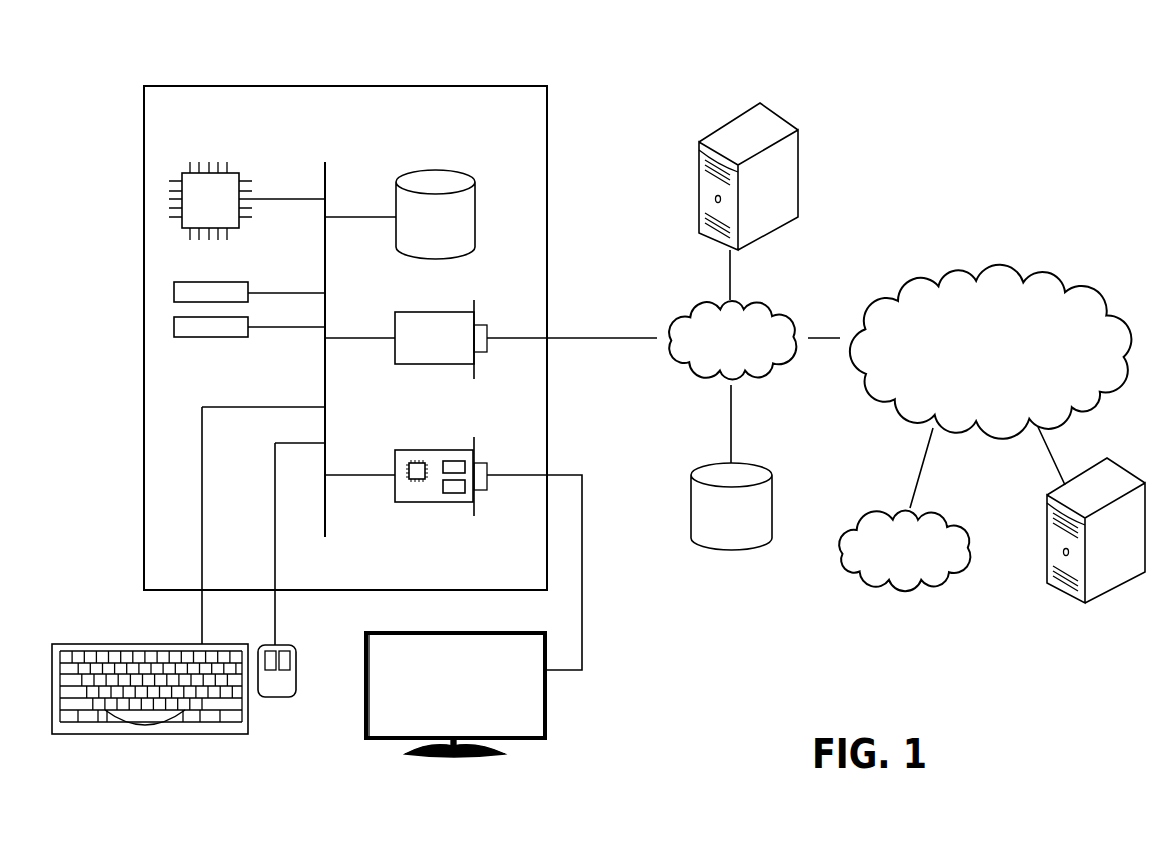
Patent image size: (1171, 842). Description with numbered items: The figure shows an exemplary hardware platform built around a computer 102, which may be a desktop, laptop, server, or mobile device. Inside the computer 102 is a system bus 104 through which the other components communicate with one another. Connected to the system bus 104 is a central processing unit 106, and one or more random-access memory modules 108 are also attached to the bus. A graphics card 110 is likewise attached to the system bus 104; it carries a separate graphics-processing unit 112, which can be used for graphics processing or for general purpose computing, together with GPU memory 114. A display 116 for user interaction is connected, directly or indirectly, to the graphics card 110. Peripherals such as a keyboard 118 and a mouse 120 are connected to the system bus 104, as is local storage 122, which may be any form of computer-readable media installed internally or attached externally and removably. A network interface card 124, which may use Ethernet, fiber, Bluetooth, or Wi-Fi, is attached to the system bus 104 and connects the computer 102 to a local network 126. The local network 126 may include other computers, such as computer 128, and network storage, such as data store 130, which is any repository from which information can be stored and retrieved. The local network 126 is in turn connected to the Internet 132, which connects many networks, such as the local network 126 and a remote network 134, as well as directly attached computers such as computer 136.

The computer 102 is at (502, 85).
The system bus 104 is at (327, 172).
The central processing unit (CPU) 106 is at (232, 168).
The random-access memory (RAM) modules 108 is at (250, 322).
The graphics card 110 is at (393, 462).
The graphics-processing unit (GPU) 112 is at (417, 475).
The GPU memory 114 is at (453, 493).
The display 116 is at (547, 722).
The keyboard 118 is at (150, 735).
The mouse 120 is at (275, 698).
The local storage 122 is at (478, 201).
The network interface card (NIC) 124 is at (393, 323).
The local network 126 is at (783, 297).
The computer 128 is at (783, 117).
The data store 130 is at (763, 465).
The Internet 132 is at (1033, 263).
The remote network 134 is at (958, 507).
The computer 136 is at (1122, 463).